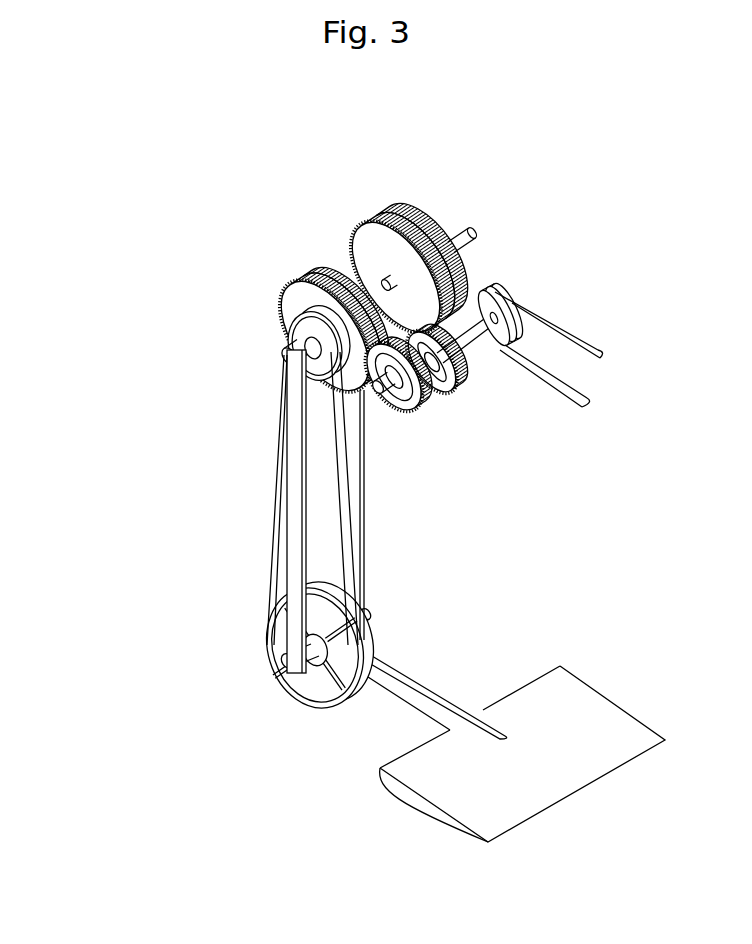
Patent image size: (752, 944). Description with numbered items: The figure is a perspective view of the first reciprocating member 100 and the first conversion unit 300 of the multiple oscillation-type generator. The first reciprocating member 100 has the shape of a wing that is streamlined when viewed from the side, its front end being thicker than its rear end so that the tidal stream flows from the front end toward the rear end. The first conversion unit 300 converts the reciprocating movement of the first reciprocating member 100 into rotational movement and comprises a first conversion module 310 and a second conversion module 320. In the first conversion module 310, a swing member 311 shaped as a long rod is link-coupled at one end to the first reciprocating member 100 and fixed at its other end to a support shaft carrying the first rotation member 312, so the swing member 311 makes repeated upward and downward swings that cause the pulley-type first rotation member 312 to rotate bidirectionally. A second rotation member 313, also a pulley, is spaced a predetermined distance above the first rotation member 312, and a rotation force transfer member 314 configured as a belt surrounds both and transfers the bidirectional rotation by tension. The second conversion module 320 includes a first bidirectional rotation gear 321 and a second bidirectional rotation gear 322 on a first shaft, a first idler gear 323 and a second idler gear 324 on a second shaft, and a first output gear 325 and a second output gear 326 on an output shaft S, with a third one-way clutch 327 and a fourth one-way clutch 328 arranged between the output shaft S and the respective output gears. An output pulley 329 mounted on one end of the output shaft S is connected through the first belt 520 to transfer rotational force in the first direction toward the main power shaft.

The first reciprocating member 100 is at (463, 806).
The first conversion unit 300 is at (141, 170).
The first conversion module 310 is at (170, 393).
The swing member 311 is at (395, 686).
The first rotation member 312 is at (266, 630).
The second rotation member 313 is at (286, 321).
The rotation force transfer member 314 is at (280, 498).
The second conversion module 320 is at (234, 239).
The first bidirectional rotation gear 321 is at (281, 288).
The second bidirectional rotation gear 322 is at (316, 270).
The first idler gear 323 is at (367, 222).
The second idler gear 324 is at (401, 206).
The first output gear 325 is at (413, 413).
The second output gear 326 is at (461, 388).
The third one-way clutch 327 is at (393, 405).
The fourth one-way clutch 328 is at (437, 380).
The output pulley 329 is at (490, 297).
The first belt 520 is at (567, 323).
The output shaft S is at (475, 334).